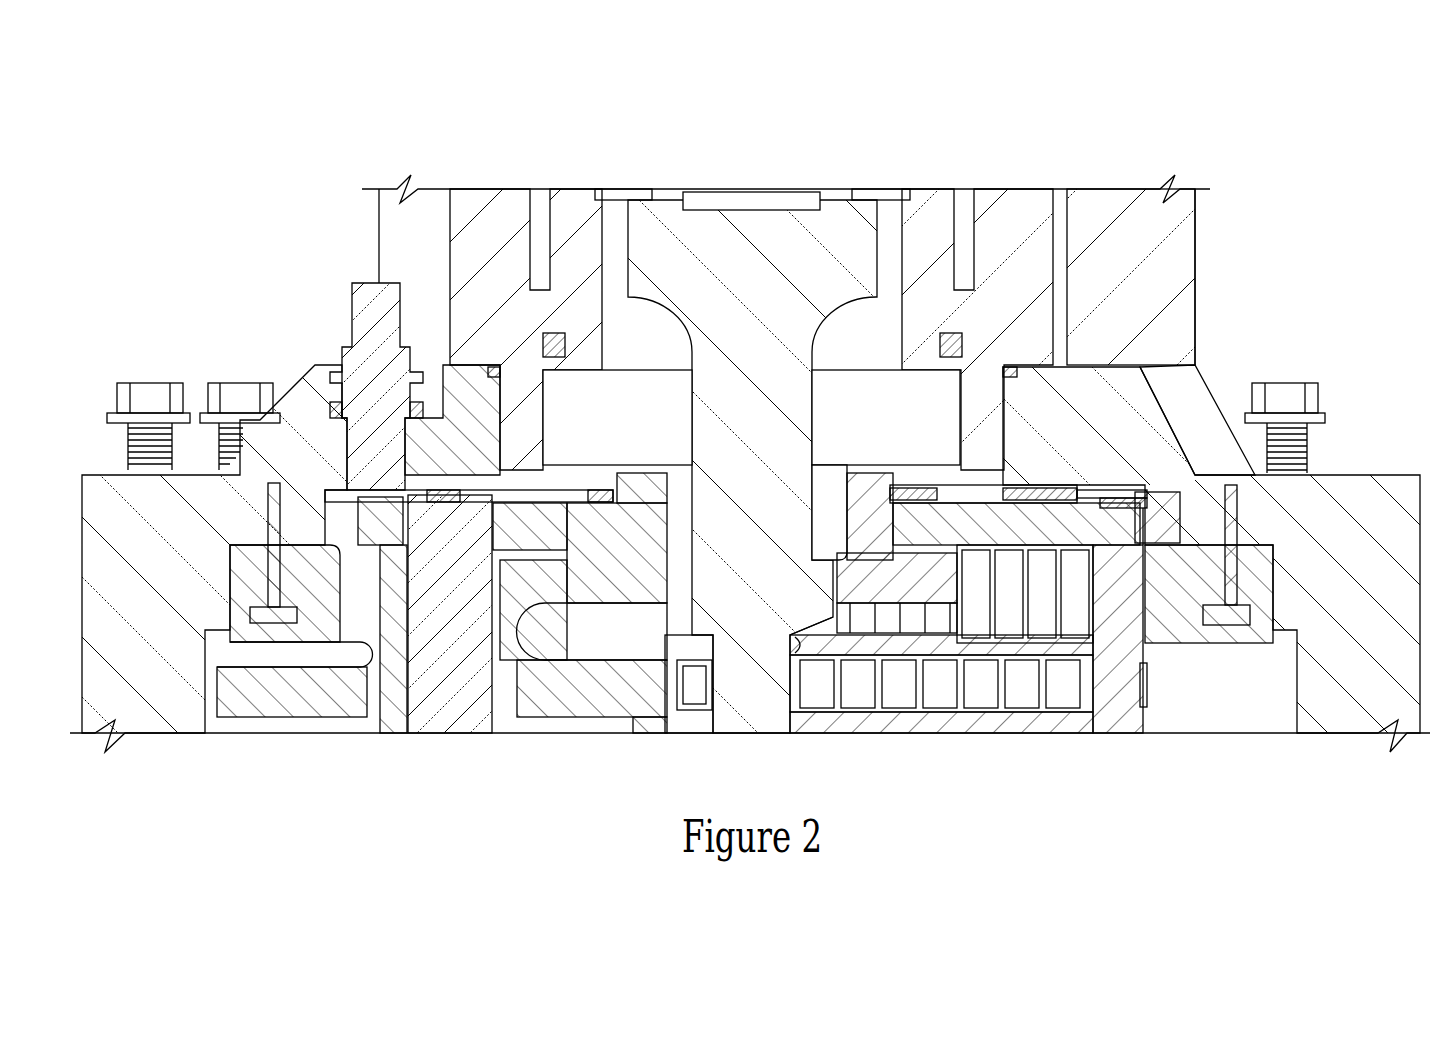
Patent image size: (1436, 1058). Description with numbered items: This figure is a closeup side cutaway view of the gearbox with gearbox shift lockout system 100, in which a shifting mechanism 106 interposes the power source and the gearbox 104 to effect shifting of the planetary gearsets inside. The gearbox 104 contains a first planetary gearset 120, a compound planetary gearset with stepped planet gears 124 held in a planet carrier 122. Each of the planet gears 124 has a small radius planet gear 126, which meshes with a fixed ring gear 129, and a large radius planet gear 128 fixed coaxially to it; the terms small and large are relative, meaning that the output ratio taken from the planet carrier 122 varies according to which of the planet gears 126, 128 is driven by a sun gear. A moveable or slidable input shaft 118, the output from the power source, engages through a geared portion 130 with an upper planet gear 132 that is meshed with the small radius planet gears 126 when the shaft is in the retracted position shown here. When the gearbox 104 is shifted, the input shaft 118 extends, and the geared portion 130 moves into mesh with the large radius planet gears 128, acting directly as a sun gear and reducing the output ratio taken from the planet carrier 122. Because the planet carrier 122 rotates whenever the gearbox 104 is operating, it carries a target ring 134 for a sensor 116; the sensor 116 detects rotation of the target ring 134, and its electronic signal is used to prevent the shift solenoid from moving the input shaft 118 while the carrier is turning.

The gearbox shift lockout system 100 is at (925, 100).
The gearbox 104 is at (1397, 482).
The shifting mechanism 106 is at (1188, 255).
The sensor 116 is at (362, 320).
The input shaft 118 is at (670, 197).
The first planetary gearset 120 is at (1143, 684).
The planet carrier 122 is at (1118, 725).
The stepped planet gears 124 is at (568, 716).
The small radius planet gear 126 is at (557, 617).
The large radius planet gear 128 is at (613, 712).
The fixed ring gear 129 is at (1177, 640).
The geared portion 130 is at (840, 607).
The upper planet gear 132 is at (866, 467).
The target ring 134 is at (385, 495).